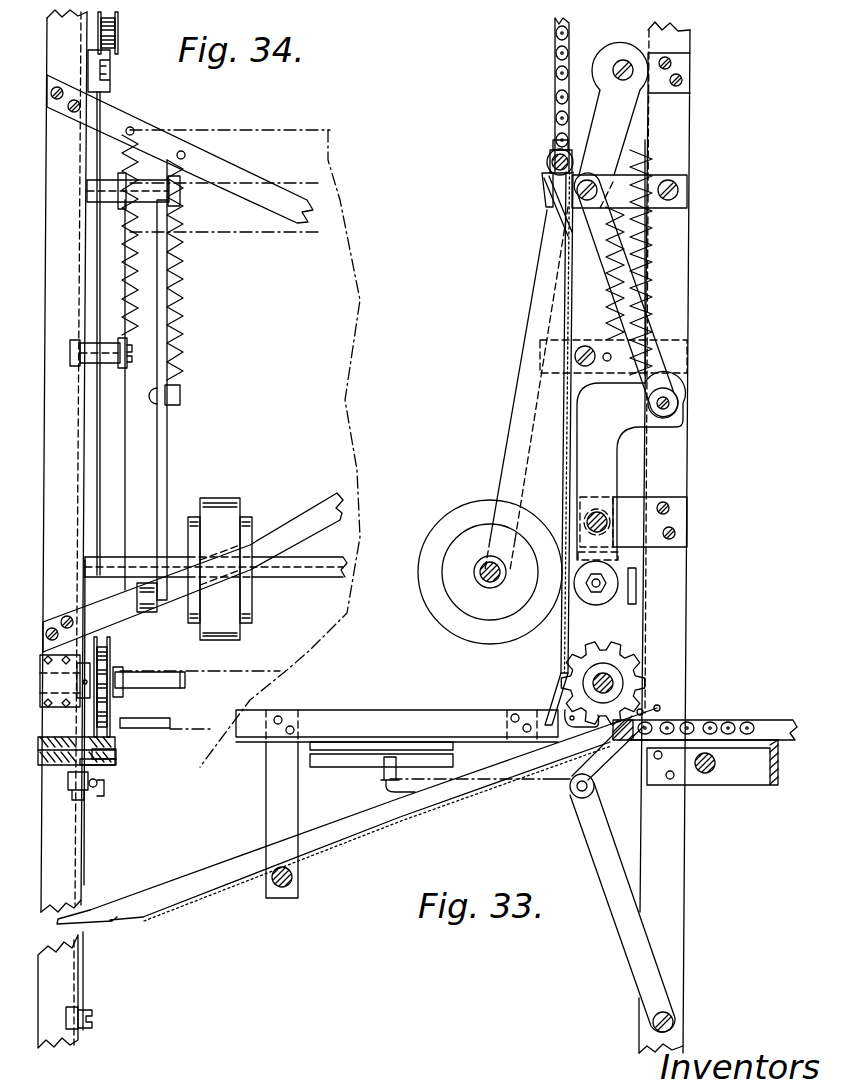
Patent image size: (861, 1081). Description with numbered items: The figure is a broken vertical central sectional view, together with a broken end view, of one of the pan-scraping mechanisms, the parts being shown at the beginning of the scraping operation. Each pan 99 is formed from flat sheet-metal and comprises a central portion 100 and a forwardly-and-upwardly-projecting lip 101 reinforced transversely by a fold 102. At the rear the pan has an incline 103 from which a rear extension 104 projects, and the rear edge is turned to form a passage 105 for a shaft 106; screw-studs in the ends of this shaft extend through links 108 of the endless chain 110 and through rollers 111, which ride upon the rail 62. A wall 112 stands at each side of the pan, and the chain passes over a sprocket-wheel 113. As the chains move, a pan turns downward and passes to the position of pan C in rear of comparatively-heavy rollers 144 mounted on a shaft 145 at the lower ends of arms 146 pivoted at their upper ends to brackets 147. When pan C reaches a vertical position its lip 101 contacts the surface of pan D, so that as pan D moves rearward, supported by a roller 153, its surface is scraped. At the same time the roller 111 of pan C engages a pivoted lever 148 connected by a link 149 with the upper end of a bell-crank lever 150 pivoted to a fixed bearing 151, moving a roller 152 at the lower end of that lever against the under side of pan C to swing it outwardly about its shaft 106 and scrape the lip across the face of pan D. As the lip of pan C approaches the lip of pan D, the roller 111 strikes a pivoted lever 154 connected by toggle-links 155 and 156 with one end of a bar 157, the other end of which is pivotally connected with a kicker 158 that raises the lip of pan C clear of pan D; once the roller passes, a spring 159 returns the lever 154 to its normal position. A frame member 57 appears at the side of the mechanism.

In FIG. 34, the frame plate 57 is at (43, 885).
In FIG. 33, the frame plate 57 is at (688, 861).
In FIG. 34, the rail 62 is at (118, 750).
In FIG. 33, the rail 62 is at (440, 708).
In FIG. 33, the pan 99 is at (563, 443).
In FIG. 33, the central portion 100 is at (563, 417).
In FIG. 33, the lip 101 is at (572, 788).
In FIG. 33, the fold 102 is at (548, 706).
In FIG. 33, the incline 103 is at (555, 211).
In FIG. 33, the rear extension 104 is at (553, 145).
In FIG. 33, the passage 105 is at (543, 177).
In FIG. 34, the shaft 106 is at (170, 718).
In FIG. 33, the shaft 106 is at (547, 164).
In FIG. 34, the links 108 is at (118, 22).
In FIG. 33, the links 108 is at (556, 108).
In FIG. 34, the endless chain 110 is at (117, 38).
In FIG. 33, the endless chain 110 is at (555, 42).
In FIG. 34, the rollers 111 is at (166, 730).
In FIG. 33, the rollers 111 is at (572, 160).
In FIG. 33, the wall 112 is at (547, 273).
In FIG. 34, the sprocket-wheel 113 is at (108, 703).
In FIG. 33, the sprocket-wheel 113 is at (655, 683).
In FIG. 34, the rollers 144 is at (238, 498).
In FIG. 33, the rollers 144 is at (438, 516).
In FIG. 34, the shaft 145 is at (342, 582).
In FIG. 33, the shaft 145 is at (484, 580).
In FIG. 34, the arms 146 is at (100, 448).
In FIG. 33, the arms 146 is at (498, 478).
In FIG. 33, the brackets 147 is at (612, 46).
In FIG. 34, the pivoted lever 148 is at (90, 206).
In FIG. 33, the pivoted lever 148 is at (650, 178).
In FIG. 34, the link 149 is at (184, 322).
In FIG. 33, the link 149 is at (660, 273).
In FIG. 34, the bell-crank lever 150 is at (168, 480).
In FIG. 33, the bell-crank lever 150 is at (625, 474).
In FIG. 33, the fixed bearing 151 is at (628, 494).
In FIG. 34, the roller 152 is at (150, 614).
In FIG. 33, the roller 152 is at (592, 612).
In FIG. 33, the roller 153 is at (708, 776).
In FIG. 34, the pivoted lever 154 is at (122, 366).
In FIG. 33, the pivoted lever 154 is at (592, 342).
In FIG. 34, the toggle-link 155 is at (78, 468).
In FIG. 33, the toggle-link 155 is at (600, 388).
In FIG. 34, the toggle-link 156 is at (88, 850).
In FIG. 33, the toggle-link 156 is at (590, 850).
In FIG. 34, the bar 157 is at (100, 785).
In FIG. 33, the bar 157 is at (392, 783).
In FIG. 34, the kicker 158 is at (118, 763).
In FIG. 33, the kicker 158 is at (360, 762).
In FIG. 34, the spring 159 is at (130, 308).
In FIG. 33, the spring 159 is at (630, 234).
In FIG. 33, the pan C is at (562, 307).
In FIG. 33, the pan D is at (343, 842).